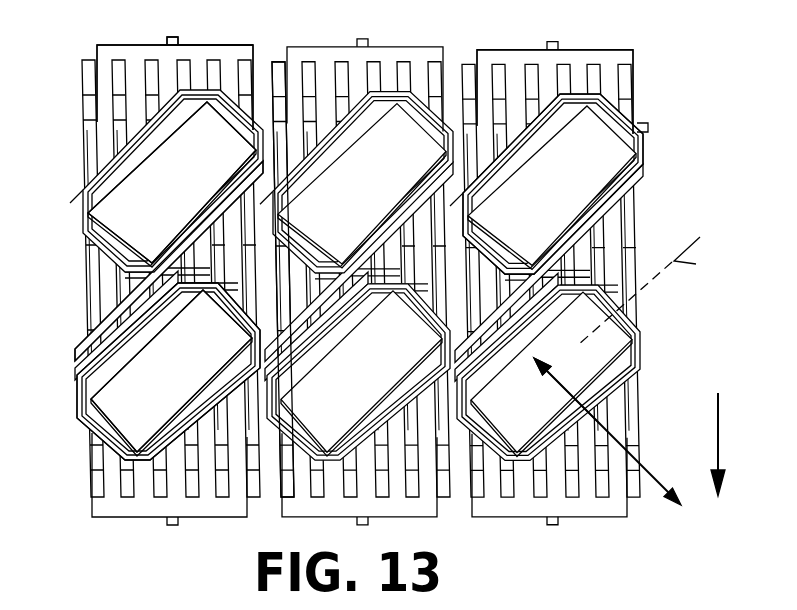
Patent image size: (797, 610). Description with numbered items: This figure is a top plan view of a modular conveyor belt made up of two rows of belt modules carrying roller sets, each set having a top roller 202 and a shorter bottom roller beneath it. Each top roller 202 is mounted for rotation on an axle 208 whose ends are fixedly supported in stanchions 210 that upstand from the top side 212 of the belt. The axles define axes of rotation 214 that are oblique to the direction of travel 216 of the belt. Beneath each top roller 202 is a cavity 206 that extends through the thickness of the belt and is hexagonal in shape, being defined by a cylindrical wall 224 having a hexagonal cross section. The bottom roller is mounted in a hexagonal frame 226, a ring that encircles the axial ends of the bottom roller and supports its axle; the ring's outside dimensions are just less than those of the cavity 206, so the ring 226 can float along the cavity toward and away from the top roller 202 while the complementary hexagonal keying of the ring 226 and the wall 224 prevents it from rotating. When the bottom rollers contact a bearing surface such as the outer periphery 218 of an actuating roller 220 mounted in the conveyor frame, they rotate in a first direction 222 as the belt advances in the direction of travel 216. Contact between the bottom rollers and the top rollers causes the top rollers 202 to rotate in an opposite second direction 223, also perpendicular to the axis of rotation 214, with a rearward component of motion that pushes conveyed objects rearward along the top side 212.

The top roller 202 is at (118, 207).
The cavity 206 is at (207, 400).
The axle 208 is at (622, 112).
The stanchion 210 is at (451, 128).
The top side 212 is at (284, 132).
The axis of rotation 214 is at (703, 263).
The direction of travel 216 is at (722, 438).
The outer periphery 218 is at (137, 48).
The actuating roller 220 is at (203, 46).
The first direction 222 is at (632, 452).
The second direction 223 is at (550, 376).
The cylindrical wall 224 is at (128, 332).
The hexagonal frame 226 is at (180, 422).